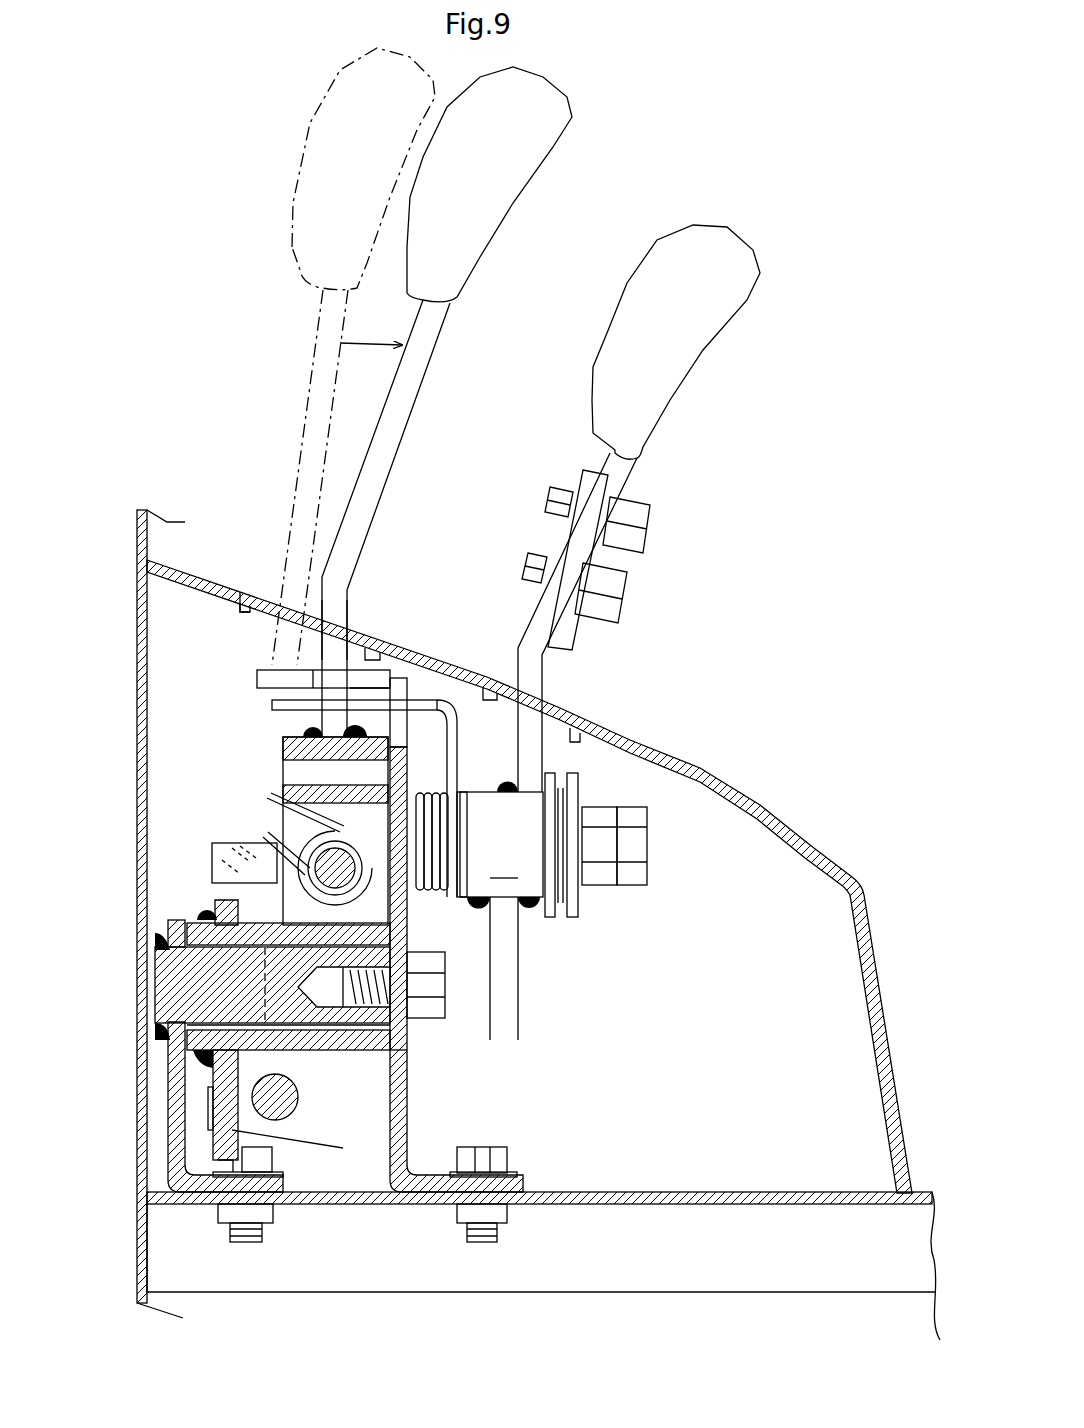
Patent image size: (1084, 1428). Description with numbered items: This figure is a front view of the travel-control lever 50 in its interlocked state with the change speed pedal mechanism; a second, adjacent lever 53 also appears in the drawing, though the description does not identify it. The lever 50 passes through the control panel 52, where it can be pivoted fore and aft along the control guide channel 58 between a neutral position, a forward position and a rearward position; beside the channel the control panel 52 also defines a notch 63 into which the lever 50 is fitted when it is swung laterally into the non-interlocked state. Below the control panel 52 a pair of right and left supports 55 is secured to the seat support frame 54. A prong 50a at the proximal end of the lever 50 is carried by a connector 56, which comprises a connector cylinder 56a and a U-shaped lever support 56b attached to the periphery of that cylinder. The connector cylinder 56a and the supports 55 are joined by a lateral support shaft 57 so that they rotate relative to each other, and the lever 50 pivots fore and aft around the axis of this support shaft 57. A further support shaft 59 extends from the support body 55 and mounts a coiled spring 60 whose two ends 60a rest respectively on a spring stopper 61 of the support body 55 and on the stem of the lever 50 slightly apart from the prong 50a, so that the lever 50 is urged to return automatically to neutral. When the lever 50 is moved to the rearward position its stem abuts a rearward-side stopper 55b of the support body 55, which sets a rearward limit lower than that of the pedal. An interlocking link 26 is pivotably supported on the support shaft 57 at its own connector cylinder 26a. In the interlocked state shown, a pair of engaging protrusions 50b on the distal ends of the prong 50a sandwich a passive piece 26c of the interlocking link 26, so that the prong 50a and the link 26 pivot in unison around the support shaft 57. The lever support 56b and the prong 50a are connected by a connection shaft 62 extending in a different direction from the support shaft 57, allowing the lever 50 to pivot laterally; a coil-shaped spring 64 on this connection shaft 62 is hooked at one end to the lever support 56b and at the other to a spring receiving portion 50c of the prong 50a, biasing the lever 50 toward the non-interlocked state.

The interlocking link 26 is at (203, 1150).
The connector cylinder 26a is at (190, 1037).
The passive piece 26c is at (215, 1118).
The travel-control lever 50 is at (465, 258).
The prong 50a is at (280, 707).
The engaging protrusions 50b is at (203, 1097).
The spring receiving portion 50c is at (213, 848).
The control panel 52 is at (690, 755).
The second operation lever 53 is at (655, 412).
The seat support frame 54 is at (680, 1192).
The supports 55 is at (188, 1185).
The rearward-side stopper 55b is at (353, 680).
The connector 56 is at (350, 1052).
The connector cylinder 56a is at (390, 1055).
The lever support 56b is at (285, 790).
The support shaft 57 is at (160, 975).
The control guide channel 58 is at (316, 612).
The support shaft 59 is at (650, 848).
The coiled spring 60 is at (450, 778).
The spring ends 60a is at (260, 672).
The spring stopper 61 is at (400, 680).
The connection shaft 62 is at (310, 843).
The notch 63 is at (258, 598).
The coil-shaped spring 64 is at (268, 923).